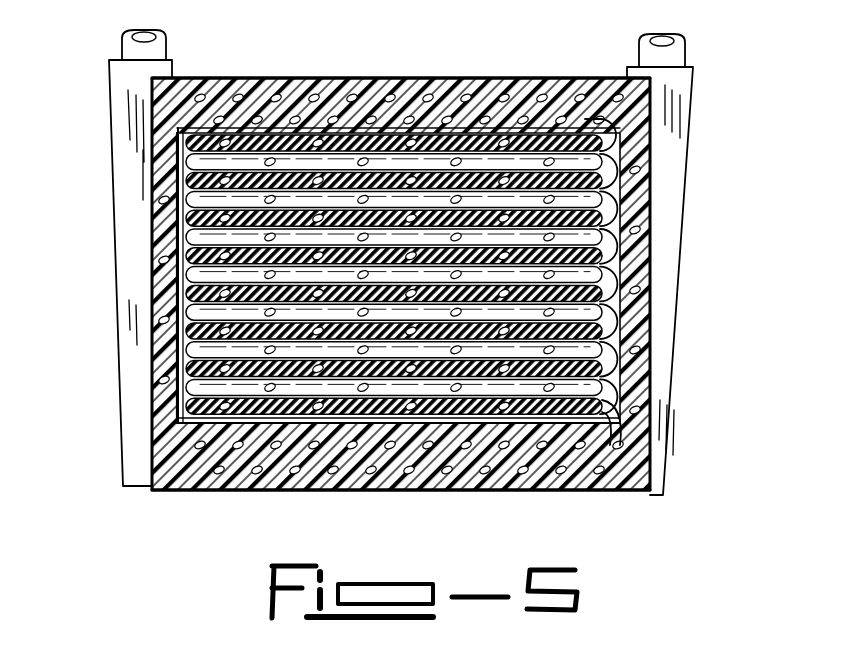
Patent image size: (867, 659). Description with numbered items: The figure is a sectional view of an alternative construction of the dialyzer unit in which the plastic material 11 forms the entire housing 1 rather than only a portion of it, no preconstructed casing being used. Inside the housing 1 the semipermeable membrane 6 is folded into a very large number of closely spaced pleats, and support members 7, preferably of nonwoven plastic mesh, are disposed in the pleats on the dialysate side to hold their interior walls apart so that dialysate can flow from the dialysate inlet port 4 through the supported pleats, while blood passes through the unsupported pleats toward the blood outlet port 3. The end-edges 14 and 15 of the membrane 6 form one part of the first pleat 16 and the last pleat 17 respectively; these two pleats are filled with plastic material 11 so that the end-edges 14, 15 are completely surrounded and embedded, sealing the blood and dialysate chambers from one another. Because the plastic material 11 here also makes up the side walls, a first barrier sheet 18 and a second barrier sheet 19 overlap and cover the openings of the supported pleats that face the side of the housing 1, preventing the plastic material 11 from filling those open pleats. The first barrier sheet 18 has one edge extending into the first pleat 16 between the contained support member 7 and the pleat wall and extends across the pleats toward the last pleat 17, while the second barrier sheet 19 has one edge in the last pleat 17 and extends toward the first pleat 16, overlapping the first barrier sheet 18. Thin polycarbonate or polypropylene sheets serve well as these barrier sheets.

The housing 1 is at (714, 115).
The blood outlet port 3 is at (686, 182).
The dialysate inlet port 4 is at (122, 93).
The semipermeable membrane 6 is at (612, 405).
The support members 7 is at (203, 443).
The plastic material 11 is at (260, 100).
The end-edge 14 is at (538, 92).
The end-edge 15 is at (455, 456).
The first pleat 16 is at (618, 136).
The last pleat 17 is at (632, 436).
The first barrier sheet 18 is at (172, 168).
The second barrier sheet 19 is at (180, 326).